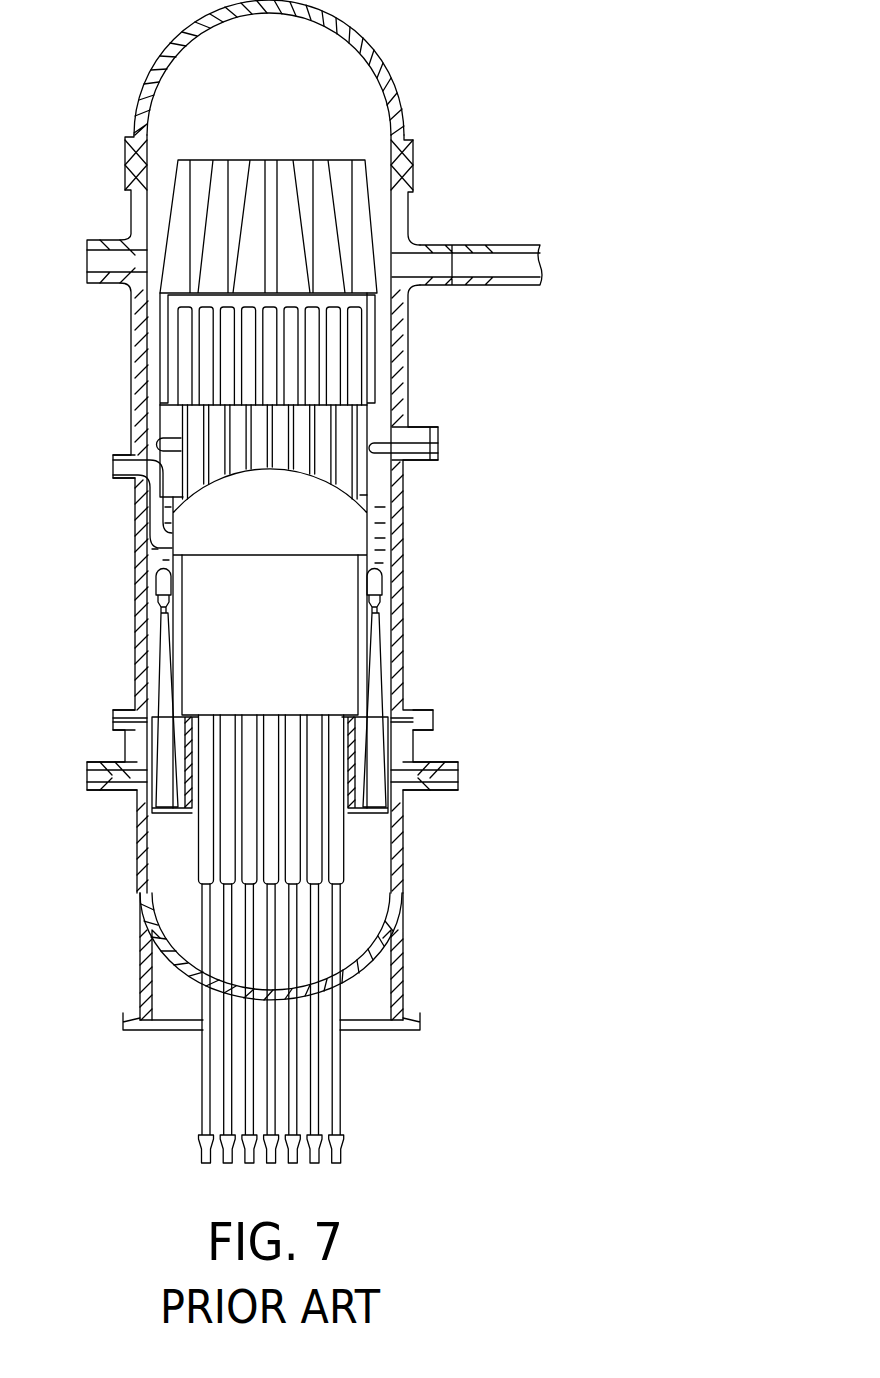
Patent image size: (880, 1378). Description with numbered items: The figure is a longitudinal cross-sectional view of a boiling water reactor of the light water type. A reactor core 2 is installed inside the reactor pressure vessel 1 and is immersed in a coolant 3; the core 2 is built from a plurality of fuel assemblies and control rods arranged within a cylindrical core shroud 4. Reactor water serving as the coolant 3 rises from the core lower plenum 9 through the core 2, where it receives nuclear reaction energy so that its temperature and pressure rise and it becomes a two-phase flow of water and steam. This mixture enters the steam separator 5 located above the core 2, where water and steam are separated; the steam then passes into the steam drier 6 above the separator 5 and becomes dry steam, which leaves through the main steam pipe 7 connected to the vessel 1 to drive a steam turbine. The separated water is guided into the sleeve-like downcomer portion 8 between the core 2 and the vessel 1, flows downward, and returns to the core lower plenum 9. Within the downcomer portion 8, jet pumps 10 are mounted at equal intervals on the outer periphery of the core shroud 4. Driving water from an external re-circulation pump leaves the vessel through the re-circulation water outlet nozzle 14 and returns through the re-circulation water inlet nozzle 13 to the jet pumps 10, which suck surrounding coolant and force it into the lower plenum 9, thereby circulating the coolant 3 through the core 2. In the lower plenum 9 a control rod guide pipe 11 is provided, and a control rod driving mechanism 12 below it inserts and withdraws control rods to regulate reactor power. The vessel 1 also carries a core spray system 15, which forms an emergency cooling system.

The reactor pressure vessel 1 is at (403, 405).
The reactor core 2 is at (350, 628).
The coolant 3 is at (390, 510).
The core shroud 4 is at (185, 623).
The steam separator 5 is at (362, 360).
The steam drier 6 is at (368, 163).
The main steam pipe 7 is at (517, 245).
The downcomer portion 8 is at (153, 555).
The core lower plenum 9 is at (363, 903).
The jet pump 10 is at (385, 655).
The control rod guide pipe 11 is at (338, 842).
The control rod driving mechanism 12 is at (203, 1065).
The re-circulation water inlet nozzle 13 is at (125, 712).
The re-circulation water outlet nozzle 14 is at (105, 752).
The core spray system 15 is at (158, 517).